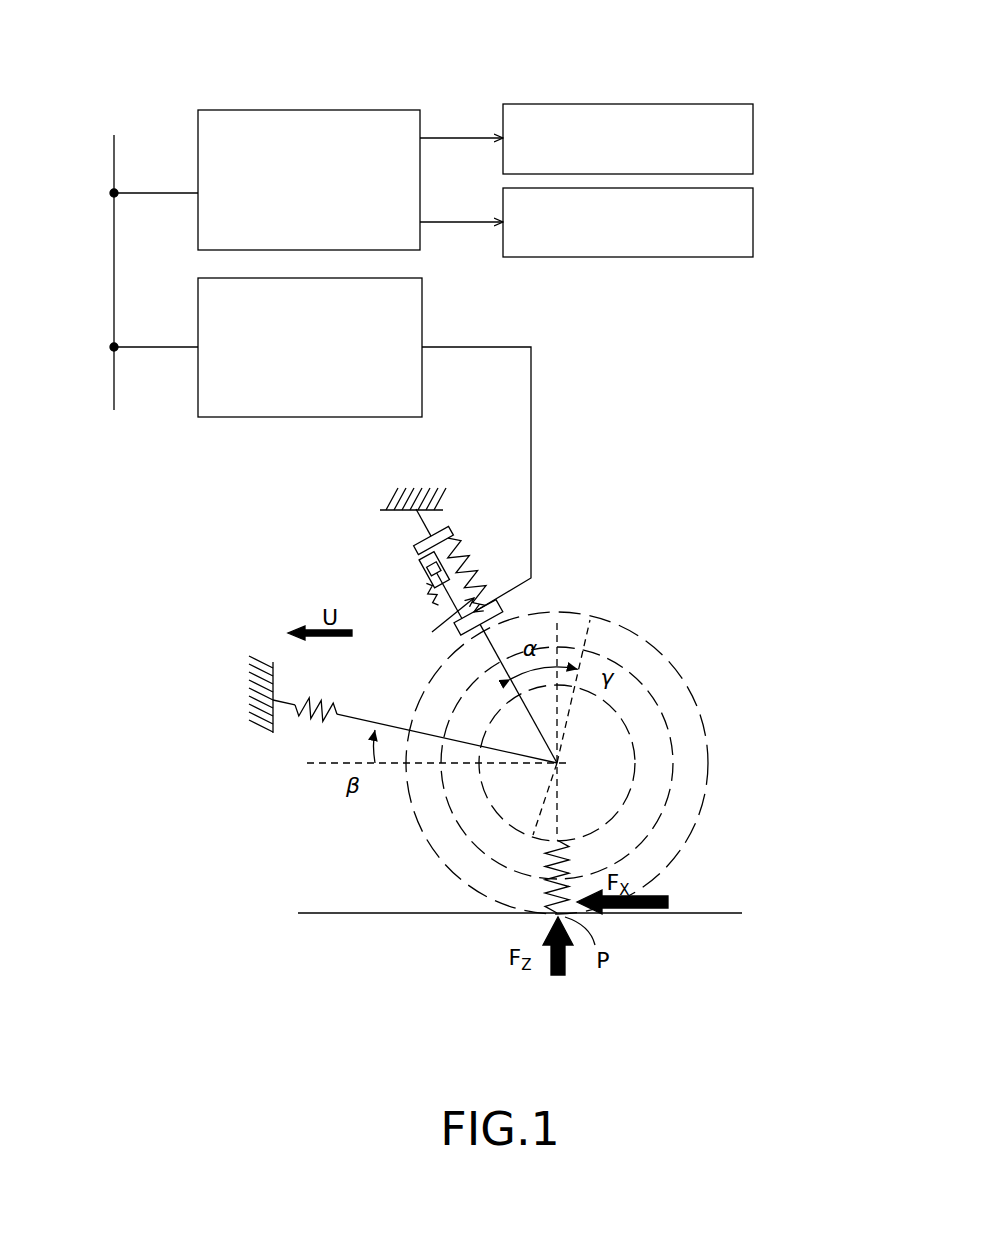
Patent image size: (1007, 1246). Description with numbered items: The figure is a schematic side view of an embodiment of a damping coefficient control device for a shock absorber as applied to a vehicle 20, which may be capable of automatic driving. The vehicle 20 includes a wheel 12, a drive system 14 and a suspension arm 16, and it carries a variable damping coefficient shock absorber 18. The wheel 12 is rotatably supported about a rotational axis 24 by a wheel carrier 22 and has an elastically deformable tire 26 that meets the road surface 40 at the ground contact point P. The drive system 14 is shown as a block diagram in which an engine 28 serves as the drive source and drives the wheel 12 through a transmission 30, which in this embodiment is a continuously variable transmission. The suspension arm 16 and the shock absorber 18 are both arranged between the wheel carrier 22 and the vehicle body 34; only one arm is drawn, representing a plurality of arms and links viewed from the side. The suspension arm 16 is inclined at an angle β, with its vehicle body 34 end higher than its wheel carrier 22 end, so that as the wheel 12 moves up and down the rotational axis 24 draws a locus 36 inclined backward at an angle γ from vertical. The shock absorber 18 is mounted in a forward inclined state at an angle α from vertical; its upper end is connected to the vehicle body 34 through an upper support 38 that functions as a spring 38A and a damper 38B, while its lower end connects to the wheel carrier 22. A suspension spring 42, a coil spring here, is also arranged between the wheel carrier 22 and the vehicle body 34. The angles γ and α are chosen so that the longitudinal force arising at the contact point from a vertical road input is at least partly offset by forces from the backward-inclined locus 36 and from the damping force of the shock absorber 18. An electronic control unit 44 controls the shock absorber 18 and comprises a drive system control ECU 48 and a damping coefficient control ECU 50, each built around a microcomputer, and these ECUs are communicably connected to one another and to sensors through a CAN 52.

The wheel 12 is at (677, 665).
The drive system 14 is at (653, 97).
The suspension arm 16 is at (357, 718).
The variable damping coefficient shock absorber 18 is at (445, 633).
The vehicle 20 is at (775, 55).
The wheel carrier 22 is at (635, 763).
The rotational axis 24 is at (560, 762).
The tire 26 is at (423, 830).
The engine 28 is at (753, 140).
The transmission 30 is at (753, 222).
The vehicle body 34 is at (418, 487).
The locus 36 is at (590, 650).
The upper support 38 is at (414, 569).
The spring 38A is at (410, 580).
The damper 38B is at (443, 540).
The road surface 40 is at (333, 912).
The suspension spring 42 is at (467, 568).
The electronic control unit 44 is at (225, 82).
The drive system control ECU 48 is at (309, 180).
The damping coefficient control ECU 50 is at (364, 445).
The CAN 52 is at (113, 277).